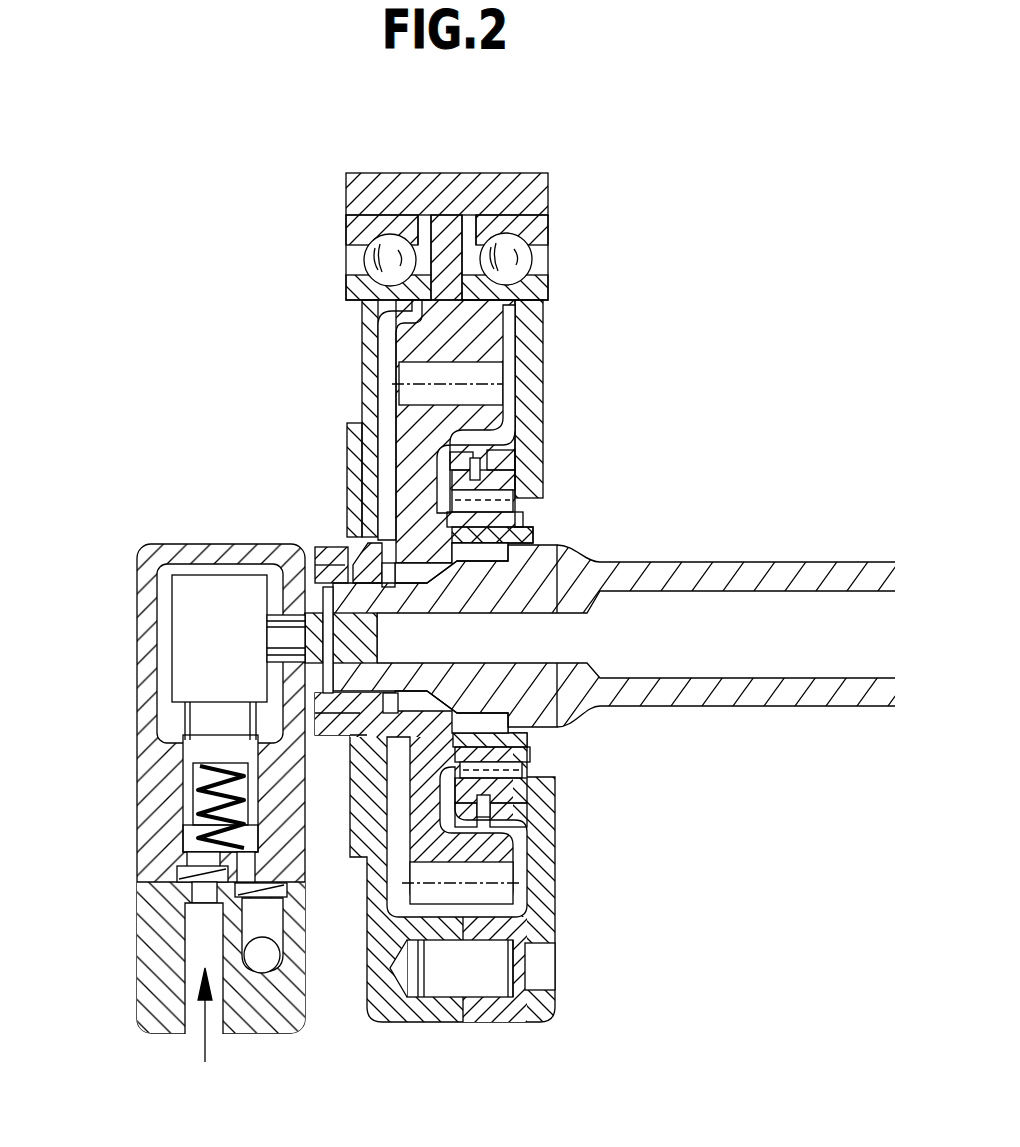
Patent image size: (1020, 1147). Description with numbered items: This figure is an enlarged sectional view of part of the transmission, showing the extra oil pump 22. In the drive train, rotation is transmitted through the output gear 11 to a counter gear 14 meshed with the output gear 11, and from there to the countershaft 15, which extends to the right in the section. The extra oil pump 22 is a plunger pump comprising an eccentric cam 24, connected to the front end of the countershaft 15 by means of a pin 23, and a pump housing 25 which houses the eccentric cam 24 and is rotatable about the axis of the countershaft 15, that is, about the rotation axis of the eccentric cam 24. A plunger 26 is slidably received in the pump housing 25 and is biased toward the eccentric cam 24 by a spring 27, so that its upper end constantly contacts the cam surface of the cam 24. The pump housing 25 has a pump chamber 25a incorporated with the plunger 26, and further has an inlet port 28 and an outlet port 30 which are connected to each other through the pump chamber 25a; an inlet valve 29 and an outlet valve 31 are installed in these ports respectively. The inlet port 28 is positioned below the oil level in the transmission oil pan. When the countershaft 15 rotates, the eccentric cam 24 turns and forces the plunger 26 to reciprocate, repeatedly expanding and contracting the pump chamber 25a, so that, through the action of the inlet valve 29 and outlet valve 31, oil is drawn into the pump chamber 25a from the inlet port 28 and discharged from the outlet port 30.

The output gear 11 is at (482, 348).
The counter gear 14 is at (477, 422).
The countershaft 15 is at (785, 578).
The extra oil pump 22 is at (202, 738).
The pin 23 is at (330, 598).
The eccentric cam 24 is at (220, 573).
The pump housing 25 is at (148, 613).
The pump chamber 25a is at (187, 835).
The plunger 26 is at (207, 725).
The spring 27 is at (210, 797).
The inlet port 28 is at (193, 962).
The inlet valve 29 is at (183, 867).
The outlet port 30 is at (225, 937).
The outlet valve 31 is at (300, 923).